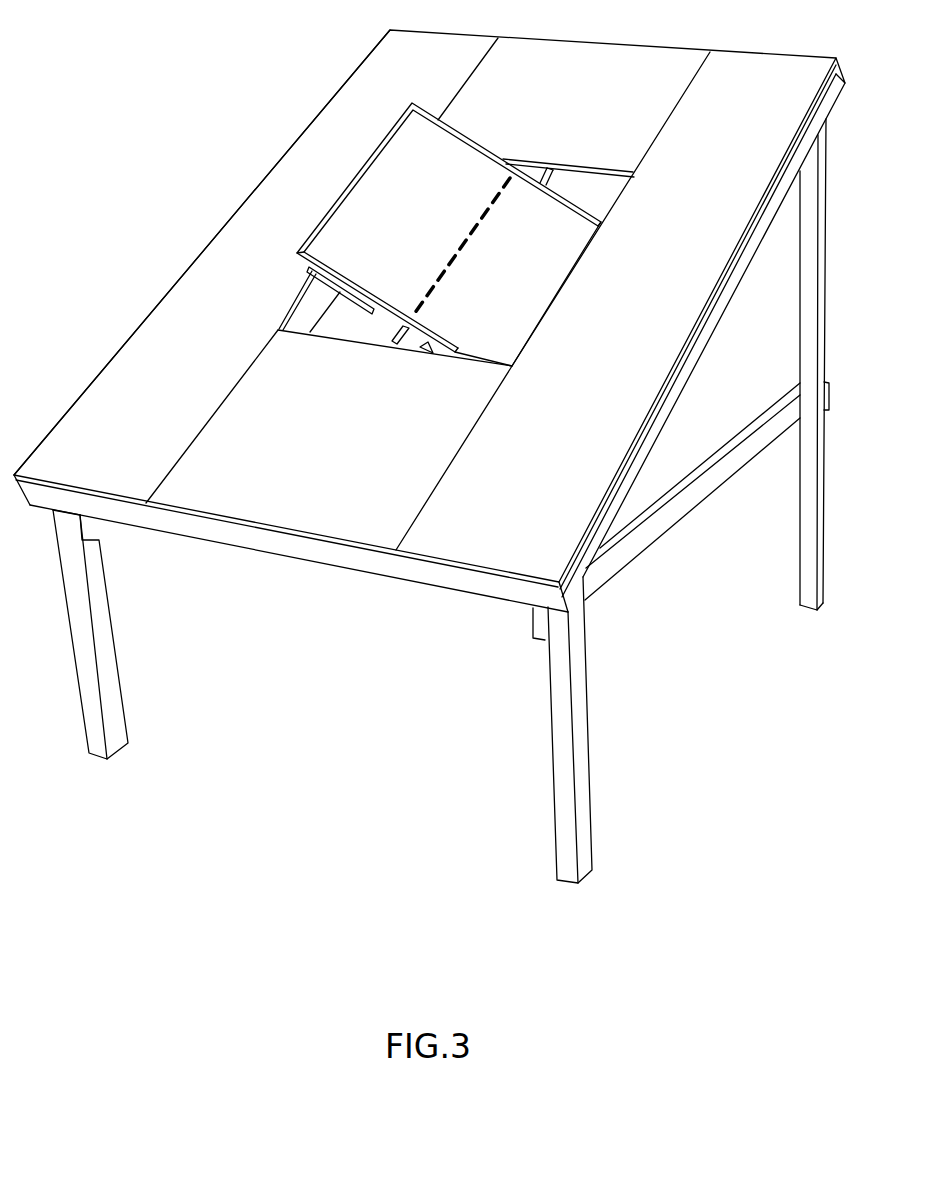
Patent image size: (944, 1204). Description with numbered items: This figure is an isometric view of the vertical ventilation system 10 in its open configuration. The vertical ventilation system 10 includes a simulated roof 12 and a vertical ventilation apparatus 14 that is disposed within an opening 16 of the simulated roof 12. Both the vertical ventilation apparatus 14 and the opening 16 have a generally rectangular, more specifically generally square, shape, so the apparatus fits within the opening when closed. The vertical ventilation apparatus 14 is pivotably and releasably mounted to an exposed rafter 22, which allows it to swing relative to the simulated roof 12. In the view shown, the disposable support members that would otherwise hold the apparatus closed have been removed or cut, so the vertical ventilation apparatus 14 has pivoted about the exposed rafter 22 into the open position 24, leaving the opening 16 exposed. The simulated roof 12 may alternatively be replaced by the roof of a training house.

The vertical ventilation system 10 is at (429, 453).
The simulated roof 12 is at (429, 318).
The vertical ventilation apparatus 14 is at (460, 137).
The opening 16 is at (600, 190).
The exposed rafter 22 is at (387, 337).
The open position 24 is at (201, 233).